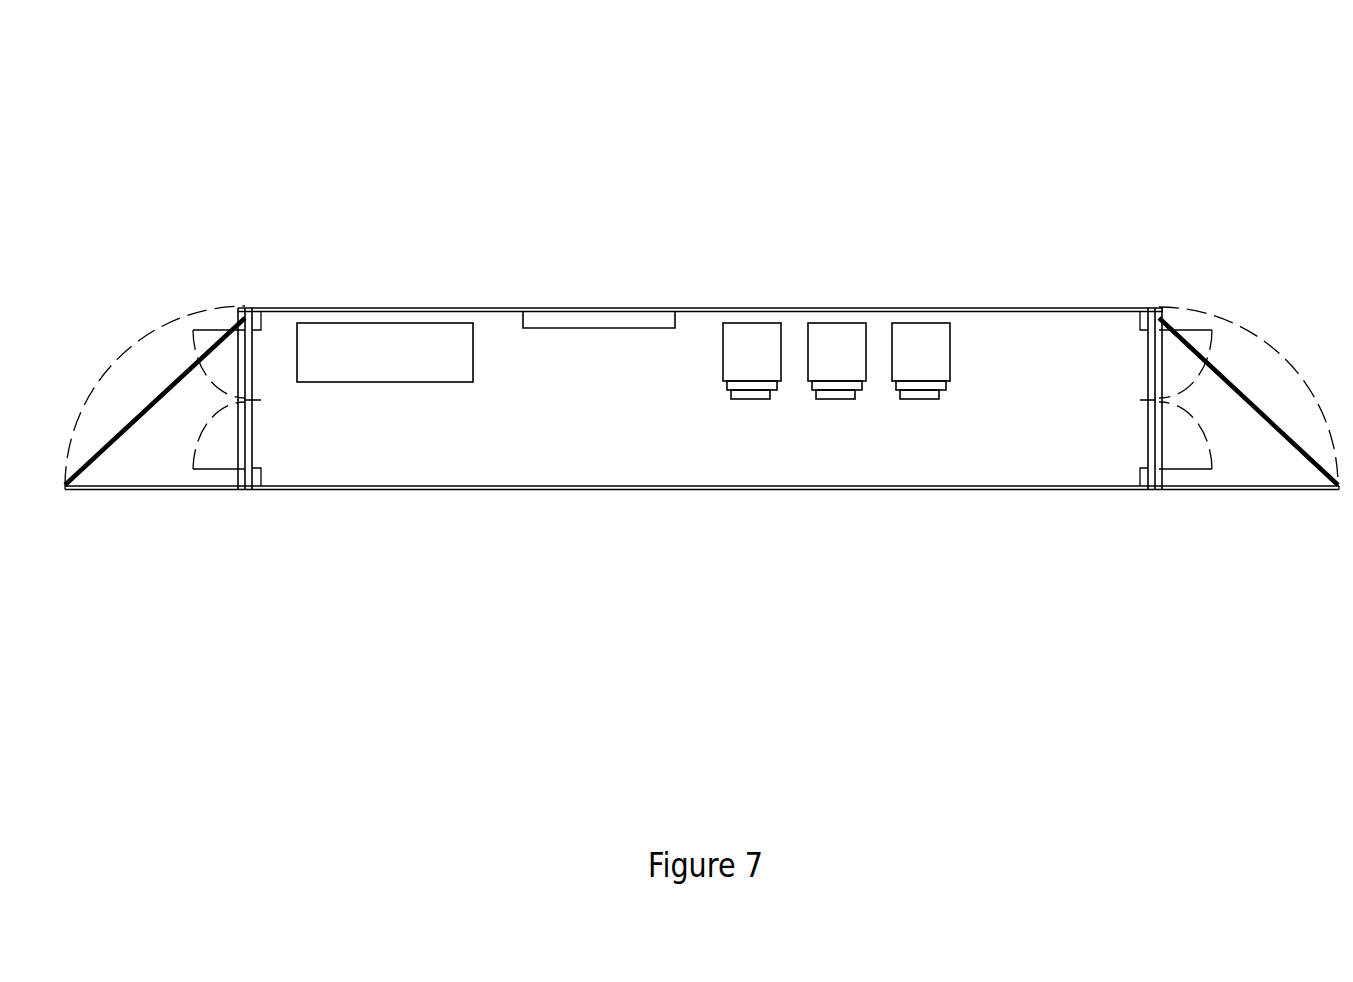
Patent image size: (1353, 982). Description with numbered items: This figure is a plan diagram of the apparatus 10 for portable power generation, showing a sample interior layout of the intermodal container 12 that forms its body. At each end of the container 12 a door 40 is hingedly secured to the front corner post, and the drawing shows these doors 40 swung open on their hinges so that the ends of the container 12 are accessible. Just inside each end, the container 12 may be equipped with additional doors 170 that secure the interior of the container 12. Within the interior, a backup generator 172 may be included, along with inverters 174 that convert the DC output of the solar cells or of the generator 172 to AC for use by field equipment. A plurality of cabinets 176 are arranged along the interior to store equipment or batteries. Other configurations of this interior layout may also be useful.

The apparatus for portable power generation 10 is at (1047, 92).
The intermodal container 12 is at (993, 308).
The door 40 is at (138, 488).
The additional doors 170 is at (215, 330).
The backup generator 172 is at (383, 323).
The inverters 174 is at (598, 311).
The cabinets 176 is at (753, 323).